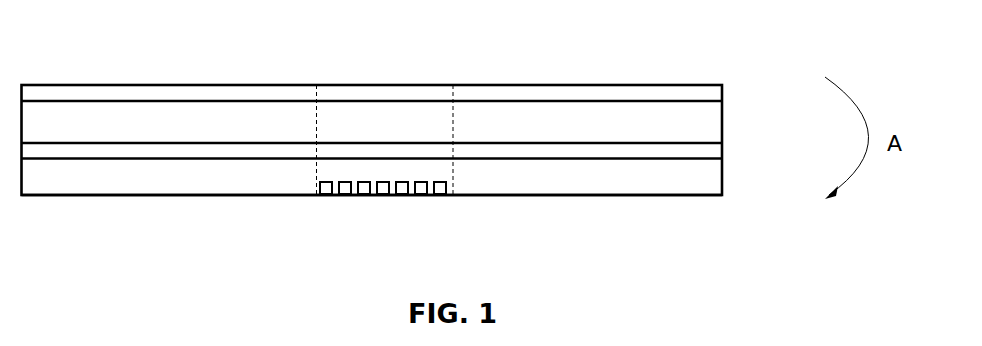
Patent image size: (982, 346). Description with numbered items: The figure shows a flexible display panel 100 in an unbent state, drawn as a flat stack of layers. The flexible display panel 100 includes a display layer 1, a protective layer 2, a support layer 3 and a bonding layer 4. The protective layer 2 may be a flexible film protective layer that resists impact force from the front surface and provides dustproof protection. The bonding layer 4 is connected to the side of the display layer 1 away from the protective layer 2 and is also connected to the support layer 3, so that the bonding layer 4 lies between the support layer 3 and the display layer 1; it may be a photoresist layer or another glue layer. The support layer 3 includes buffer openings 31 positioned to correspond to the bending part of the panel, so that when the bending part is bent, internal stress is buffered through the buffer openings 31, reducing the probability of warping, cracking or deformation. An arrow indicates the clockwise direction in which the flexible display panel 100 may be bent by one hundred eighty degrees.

The flexible display panel 100 is at (141, 58).
The display layer 1 is at (207, 109).
The protective layer 2 is at (312, 93).
The support layer 3 is at (583, 188).
The bonding layer 4 is at (702, 151).
The buffer openings 31 is at (407, 190).